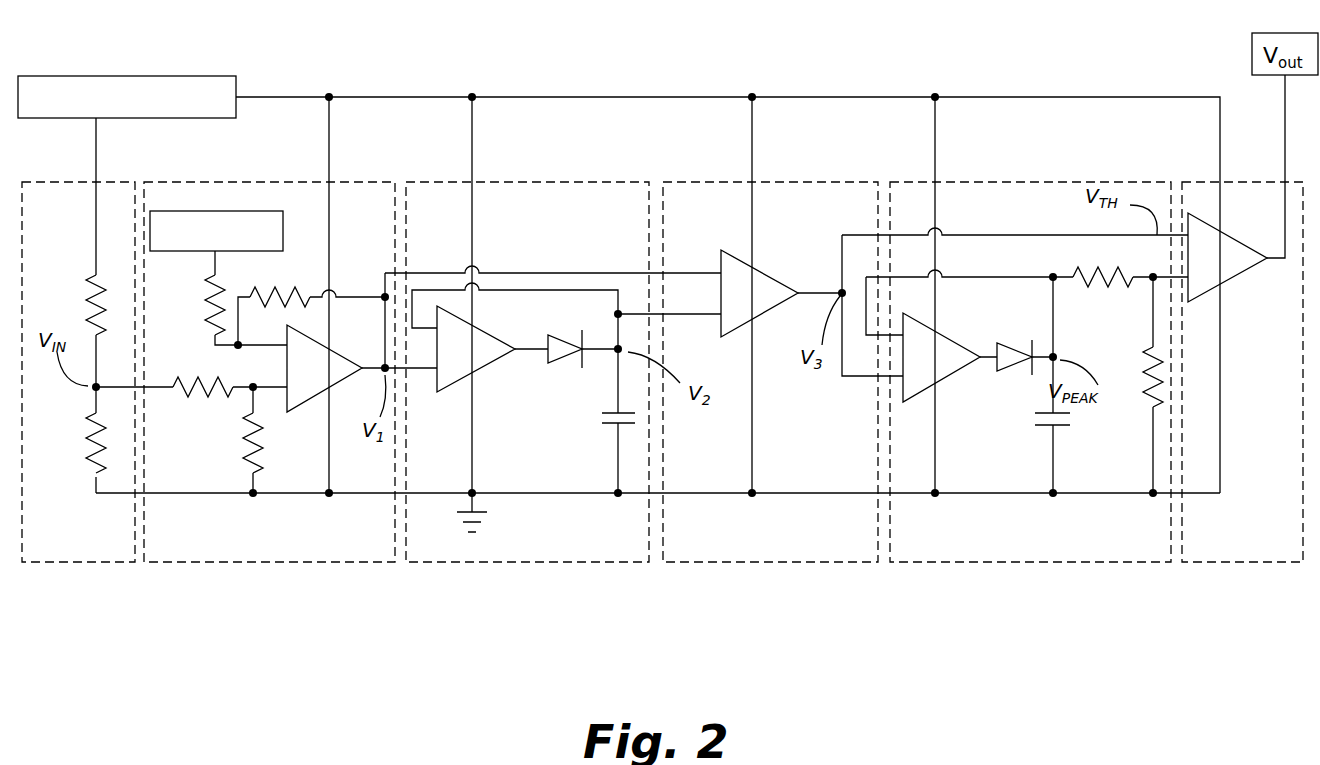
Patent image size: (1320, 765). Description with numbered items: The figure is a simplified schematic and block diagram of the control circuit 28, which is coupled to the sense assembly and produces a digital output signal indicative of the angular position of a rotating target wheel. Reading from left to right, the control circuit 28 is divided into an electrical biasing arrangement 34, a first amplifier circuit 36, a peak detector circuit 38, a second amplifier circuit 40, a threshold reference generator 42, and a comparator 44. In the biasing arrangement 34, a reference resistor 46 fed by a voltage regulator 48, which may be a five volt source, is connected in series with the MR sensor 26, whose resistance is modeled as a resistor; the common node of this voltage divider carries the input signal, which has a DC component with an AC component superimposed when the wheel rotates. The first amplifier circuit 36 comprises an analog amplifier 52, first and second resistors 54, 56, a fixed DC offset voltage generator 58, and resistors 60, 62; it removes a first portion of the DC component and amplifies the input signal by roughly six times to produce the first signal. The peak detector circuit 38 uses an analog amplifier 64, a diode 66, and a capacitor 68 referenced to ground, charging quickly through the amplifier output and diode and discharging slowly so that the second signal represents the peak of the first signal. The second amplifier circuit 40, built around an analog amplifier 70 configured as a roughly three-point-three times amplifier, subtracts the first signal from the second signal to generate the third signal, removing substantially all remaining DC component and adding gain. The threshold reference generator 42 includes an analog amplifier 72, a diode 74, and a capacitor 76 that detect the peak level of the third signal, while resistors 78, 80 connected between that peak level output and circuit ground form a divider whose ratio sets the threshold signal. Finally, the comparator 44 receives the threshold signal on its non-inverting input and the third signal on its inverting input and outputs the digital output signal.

The MR sensor 26 is at (85, 445).
The control circuit 28 is at (1012, 82).
The electrical biasing arrangement 34 is at (48, 565).
The first amplifier circuit 36 is at (268, 565).
The peak detector circuit 38 is at (510, 565).
The second amplifier circuit 40 is at (742, 565).
The threshold reference generator 42 is at (1015, 565).
The comparator 44 is at (1228, 280).
The reference resistor 46 is at (88, 290).
The voltage regulator 48 is at (218, 76).
The analog amplifier 52 is at (338, 348).
The first resistor 54 is at (205, 396).
The second resistor 56 is at (262, 418).
The fixed DC offset voltage generator 58 is at (252, 211).
The resistor 60 is at (207, 320).
The resistor 62 is at (300, 288).
The analog amplifier 64 is at (490, 335).
The diode 66 is at (560, 365).
The capacitor 68 is at (612, 425).
The analog amplifier 70 is at (790, 285).
The analog amplifier 72 is at (950, 378).
The diode 74 is at (1015, 340).
The capacitor 76 is at (1045, 428).
The resistor 78 is at (1115, 287).
The resistor 80 is at (1160, 375).